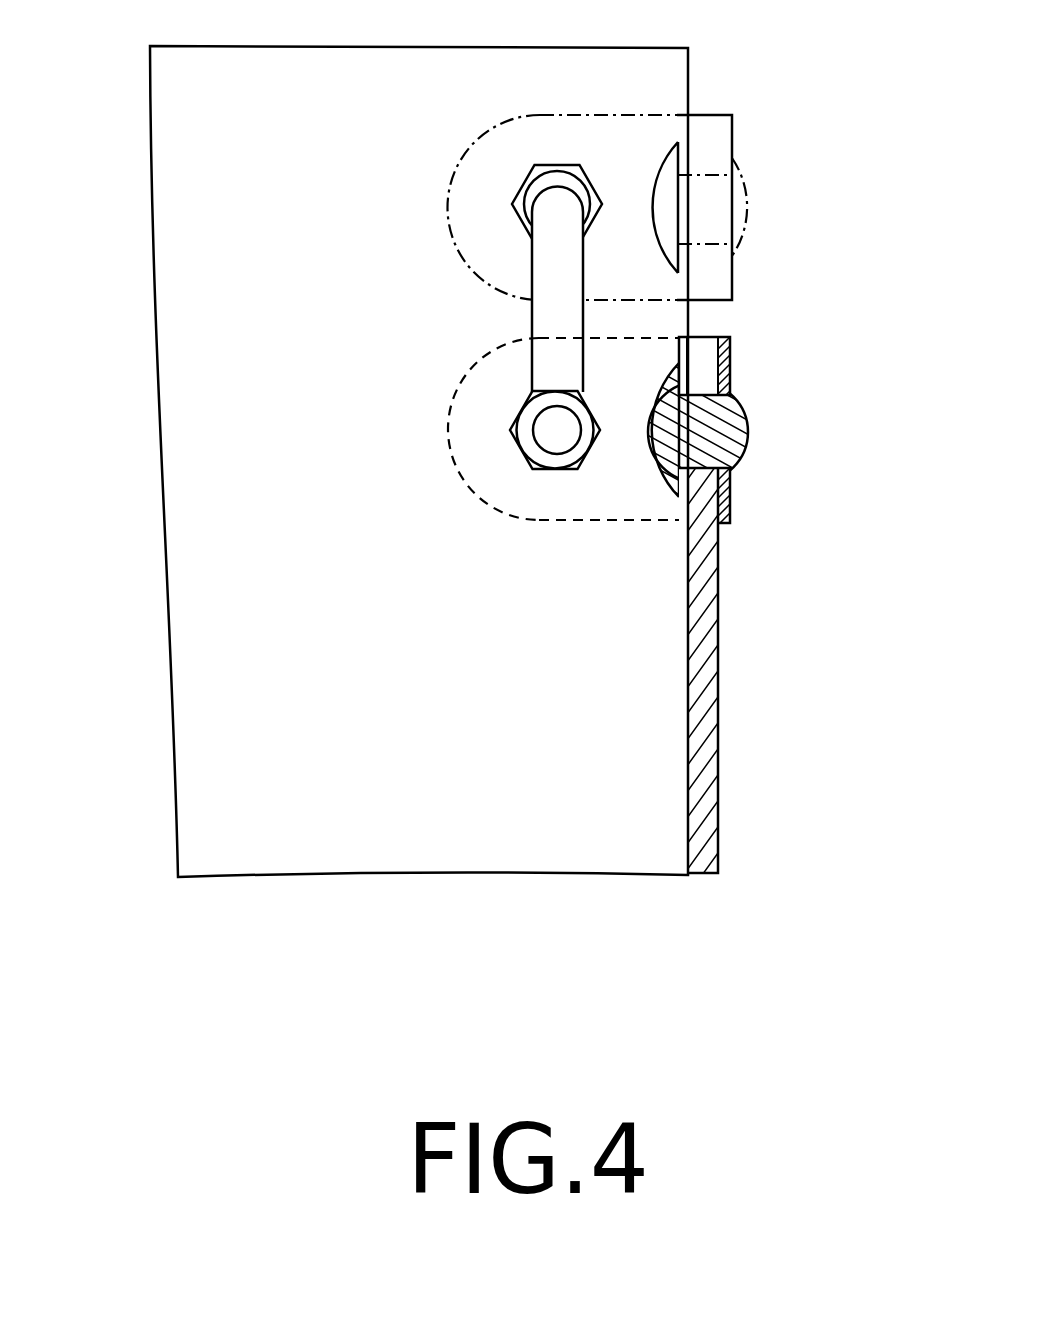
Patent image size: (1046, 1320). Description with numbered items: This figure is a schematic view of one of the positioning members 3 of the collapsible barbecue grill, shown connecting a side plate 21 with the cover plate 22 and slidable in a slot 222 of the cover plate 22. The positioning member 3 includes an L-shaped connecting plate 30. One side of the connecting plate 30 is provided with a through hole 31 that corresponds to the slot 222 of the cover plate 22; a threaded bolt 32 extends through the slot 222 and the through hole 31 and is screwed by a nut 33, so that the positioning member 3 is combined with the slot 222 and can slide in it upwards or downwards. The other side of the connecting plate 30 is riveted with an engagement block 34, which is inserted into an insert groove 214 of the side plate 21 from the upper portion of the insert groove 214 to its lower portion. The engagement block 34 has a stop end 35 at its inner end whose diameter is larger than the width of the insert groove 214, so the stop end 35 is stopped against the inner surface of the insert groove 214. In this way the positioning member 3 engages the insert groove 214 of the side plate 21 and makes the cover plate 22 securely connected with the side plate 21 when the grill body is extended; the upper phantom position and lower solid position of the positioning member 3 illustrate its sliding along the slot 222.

The positioning member 3 is at (732, 142).
The side plate 21 is at (703, 663).
The cover plate 22 is at (690, 72).
The L-shaped connecting plate 30 is at (730, 352).
The through hole 31 is at (540, 410).
The threaded bolt 32 is at (553, 430).
The nut 33 is at (513, 448).
The engagement block 34 is at (718, 427).
The stop end 35 is at (650, 447).
The insert groove 214 is at (700, 352).
The slot 222 is at (543, 315).